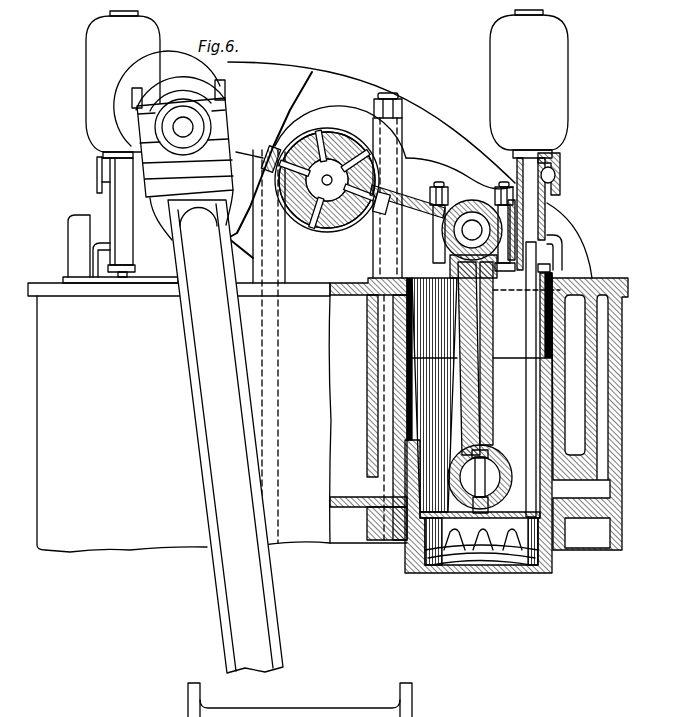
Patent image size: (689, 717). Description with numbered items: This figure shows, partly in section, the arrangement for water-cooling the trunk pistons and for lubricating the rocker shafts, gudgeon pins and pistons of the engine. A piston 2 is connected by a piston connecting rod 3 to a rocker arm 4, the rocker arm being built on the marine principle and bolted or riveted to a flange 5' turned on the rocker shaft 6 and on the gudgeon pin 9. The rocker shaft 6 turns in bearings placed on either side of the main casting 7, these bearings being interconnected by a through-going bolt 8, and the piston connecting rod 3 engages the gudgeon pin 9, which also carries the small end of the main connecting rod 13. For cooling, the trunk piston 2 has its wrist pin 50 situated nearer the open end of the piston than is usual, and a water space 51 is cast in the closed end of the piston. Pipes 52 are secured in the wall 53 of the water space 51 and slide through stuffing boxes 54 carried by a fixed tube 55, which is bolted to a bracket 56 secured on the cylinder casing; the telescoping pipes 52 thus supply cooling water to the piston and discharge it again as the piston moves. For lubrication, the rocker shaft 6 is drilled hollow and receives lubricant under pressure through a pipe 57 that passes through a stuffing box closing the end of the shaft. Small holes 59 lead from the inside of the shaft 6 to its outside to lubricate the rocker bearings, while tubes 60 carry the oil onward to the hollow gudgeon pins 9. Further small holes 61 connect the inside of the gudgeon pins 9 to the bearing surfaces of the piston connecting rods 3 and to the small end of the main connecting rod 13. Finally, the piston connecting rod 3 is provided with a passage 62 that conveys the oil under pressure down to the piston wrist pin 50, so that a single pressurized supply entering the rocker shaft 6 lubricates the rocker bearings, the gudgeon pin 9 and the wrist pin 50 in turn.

The piston 2 is at (445, 407).
The piston connecting rod 3 is at (484, 306).
The rocker arm 4 is at (371, 160).
The flange 5' is at (550, 140).
The rocker shaft 6 is at (260, 230).
The main casting 7 is at (638, 390).
The through-going bolt 8 is at (400, 102).
The gudgeon pin 9 is at (167, 125).
The main connecting rod 13 is at (207, 360).
The wrist pin 50 is at (498, 455).
The water space 51 is at (512, 549).
The pipe 52 is at (123, 280).
The wall 53 is at (495, 508).
The stuffing box 54 is at (122, 277).
The fixed tube 55 is at (98, 193).
The bracket 56 is at (98, 195).
The pipe 57 is at (343, 130).
The small hole 59 is at (316, 138).
The tube 60 is at (402, 195).
The small hole 61 is at (503, 188).
The passage 62 is at (478, 382).